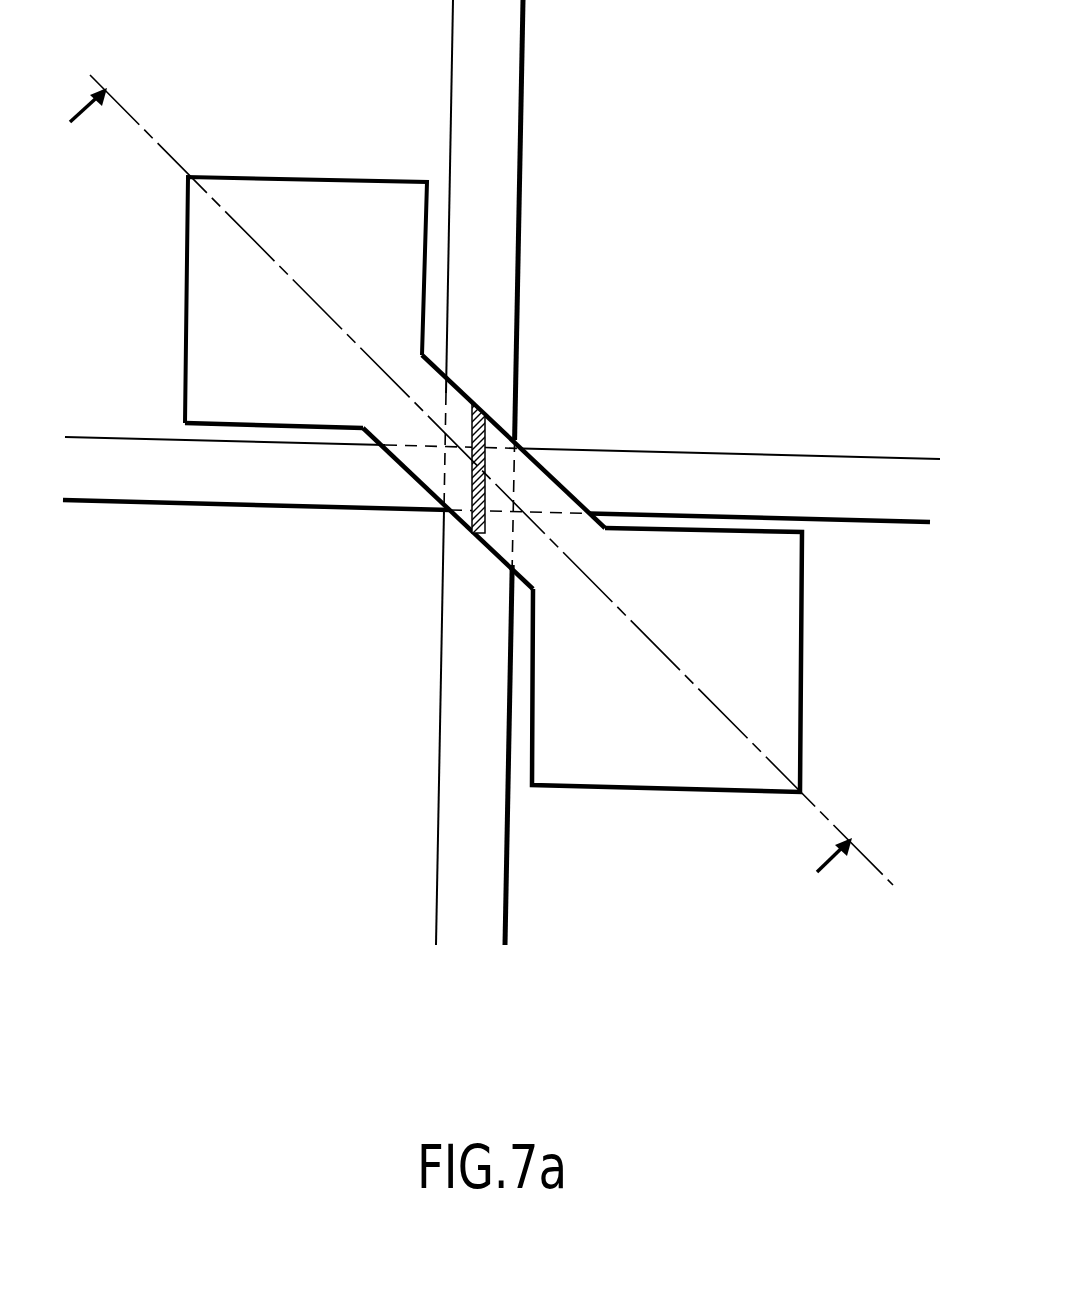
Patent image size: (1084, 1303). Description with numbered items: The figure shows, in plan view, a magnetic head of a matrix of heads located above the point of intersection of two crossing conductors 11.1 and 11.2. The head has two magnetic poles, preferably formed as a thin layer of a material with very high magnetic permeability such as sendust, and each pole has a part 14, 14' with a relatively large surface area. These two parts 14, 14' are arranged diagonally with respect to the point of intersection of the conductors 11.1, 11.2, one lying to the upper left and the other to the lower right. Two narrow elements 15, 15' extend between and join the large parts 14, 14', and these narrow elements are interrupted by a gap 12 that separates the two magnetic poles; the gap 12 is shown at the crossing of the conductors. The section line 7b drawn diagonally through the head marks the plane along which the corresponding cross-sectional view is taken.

The conductor 11.1 is at (227, 483).
The conductor 11.2 is at (463, 817).
The gap 12 is at (447, 512).
The part with relatively large surface area 14 is at (306, 260).
The part with relatively large surface area 14' is at (667, 698).
The narrow element 15 is at (508, 448).
The narrow element 15' is at (516, 472).
The section line 7b is at (481, 474).